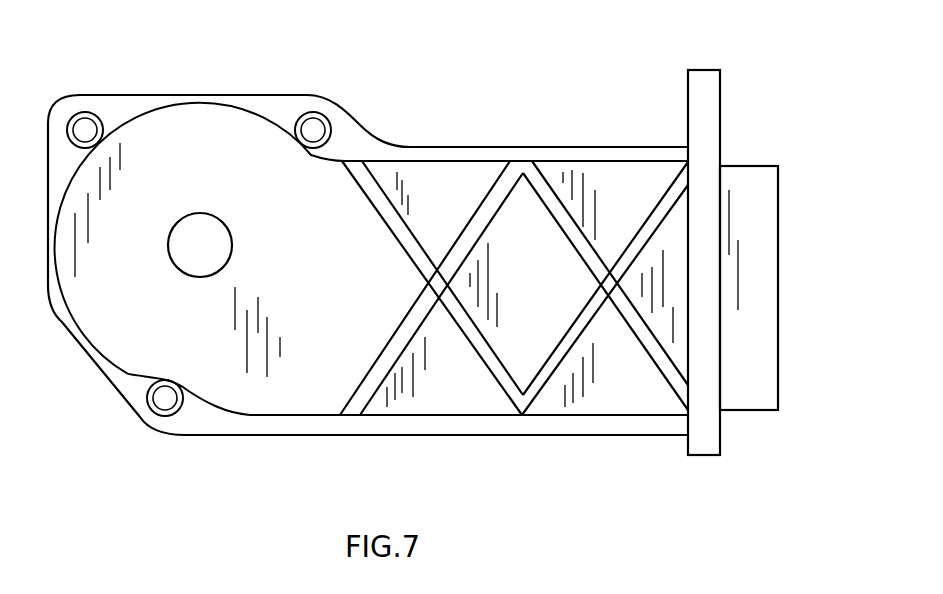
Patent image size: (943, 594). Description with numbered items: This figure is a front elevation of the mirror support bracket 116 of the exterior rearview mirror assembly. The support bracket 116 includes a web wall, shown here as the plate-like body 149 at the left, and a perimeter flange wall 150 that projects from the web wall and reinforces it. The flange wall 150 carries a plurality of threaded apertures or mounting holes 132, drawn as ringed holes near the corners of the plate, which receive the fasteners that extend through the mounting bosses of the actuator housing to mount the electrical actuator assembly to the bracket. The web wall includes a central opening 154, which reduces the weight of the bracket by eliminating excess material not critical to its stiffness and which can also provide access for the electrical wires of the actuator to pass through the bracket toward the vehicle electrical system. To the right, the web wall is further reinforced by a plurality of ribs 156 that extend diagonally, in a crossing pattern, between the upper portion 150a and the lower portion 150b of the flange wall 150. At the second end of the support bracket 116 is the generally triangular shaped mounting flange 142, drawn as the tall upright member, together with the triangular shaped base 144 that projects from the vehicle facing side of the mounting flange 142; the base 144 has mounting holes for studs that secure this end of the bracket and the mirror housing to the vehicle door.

The support bracket 116 is at (450, 114).
The threaded apertures 132 is at (82, 128).
The mounting flange 142 is at (703, 80).
The base 144 is at (748, 170).
The housing plate 149 is at (248, 395).
The flange wall 150 is at (436, 298).
The upper portion of flange wall 150a is at (492, 144).
The lower portion of flange wall 150b is at (480, 436).
The central opening 154 is at (218, 217).
The ribs 156 is at (558, 352).